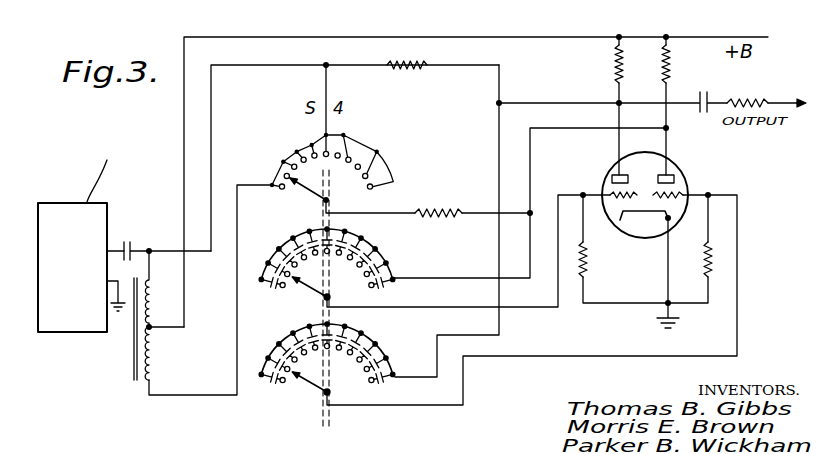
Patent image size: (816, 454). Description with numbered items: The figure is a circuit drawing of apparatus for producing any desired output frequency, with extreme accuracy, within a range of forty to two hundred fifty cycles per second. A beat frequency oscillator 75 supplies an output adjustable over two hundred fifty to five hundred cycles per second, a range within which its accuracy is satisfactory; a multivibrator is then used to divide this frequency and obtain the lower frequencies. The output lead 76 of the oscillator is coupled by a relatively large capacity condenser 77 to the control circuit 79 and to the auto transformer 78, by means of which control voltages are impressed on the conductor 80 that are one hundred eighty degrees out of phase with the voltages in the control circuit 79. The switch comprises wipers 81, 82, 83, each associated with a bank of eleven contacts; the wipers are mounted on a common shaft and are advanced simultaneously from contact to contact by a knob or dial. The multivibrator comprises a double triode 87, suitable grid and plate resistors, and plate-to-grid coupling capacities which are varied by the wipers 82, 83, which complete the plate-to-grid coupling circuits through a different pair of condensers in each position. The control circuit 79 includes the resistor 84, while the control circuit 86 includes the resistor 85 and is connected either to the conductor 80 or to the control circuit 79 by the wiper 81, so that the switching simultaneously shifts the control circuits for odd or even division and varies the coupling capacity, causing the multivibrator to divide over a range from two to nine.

The beat frequency oscillator 75 is at (63, 212).
The output lead 76 is at (115, 249).
The condenser 77 is at (134, 243).
The auto transformer 78 is at (138, 387).
The control circuit 79 is at (253, 67).
The conductor 80 is at (190, 396).
The wiper 81 is at (312, 199).
The wiper 82 is at (305, 290).
The wiper 83 is at (310, 384).
The resistor 84 is at (405, 67).
The resistor 85 is at (440, 212).
The control circuit 86 is at (383, 215).
The double triode 87 is at (685, 173).